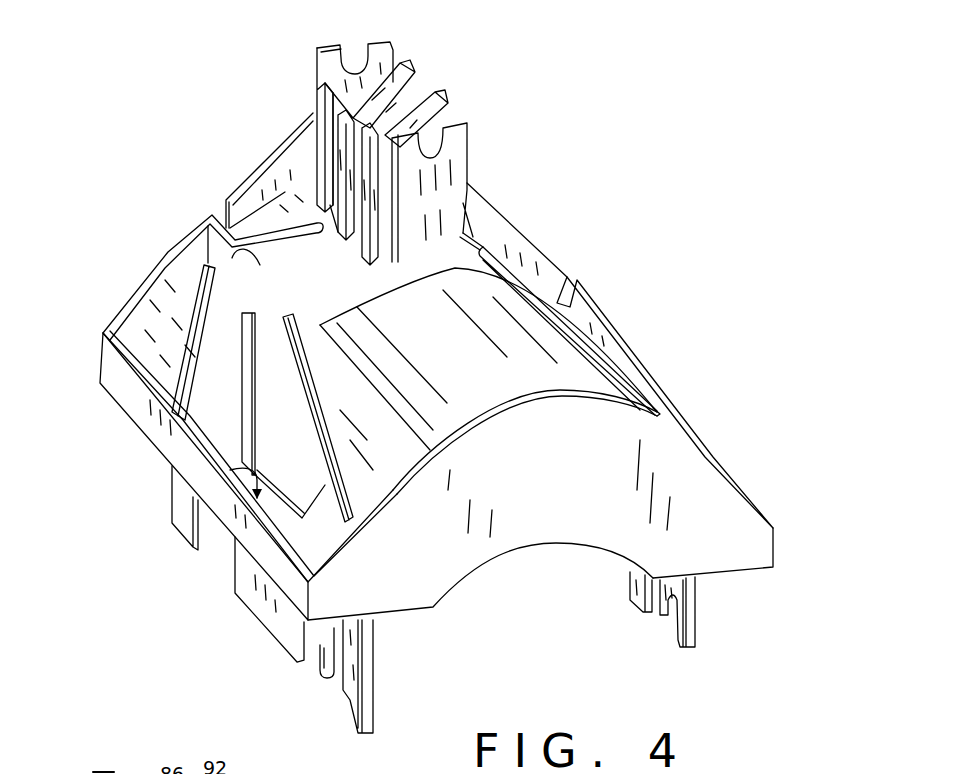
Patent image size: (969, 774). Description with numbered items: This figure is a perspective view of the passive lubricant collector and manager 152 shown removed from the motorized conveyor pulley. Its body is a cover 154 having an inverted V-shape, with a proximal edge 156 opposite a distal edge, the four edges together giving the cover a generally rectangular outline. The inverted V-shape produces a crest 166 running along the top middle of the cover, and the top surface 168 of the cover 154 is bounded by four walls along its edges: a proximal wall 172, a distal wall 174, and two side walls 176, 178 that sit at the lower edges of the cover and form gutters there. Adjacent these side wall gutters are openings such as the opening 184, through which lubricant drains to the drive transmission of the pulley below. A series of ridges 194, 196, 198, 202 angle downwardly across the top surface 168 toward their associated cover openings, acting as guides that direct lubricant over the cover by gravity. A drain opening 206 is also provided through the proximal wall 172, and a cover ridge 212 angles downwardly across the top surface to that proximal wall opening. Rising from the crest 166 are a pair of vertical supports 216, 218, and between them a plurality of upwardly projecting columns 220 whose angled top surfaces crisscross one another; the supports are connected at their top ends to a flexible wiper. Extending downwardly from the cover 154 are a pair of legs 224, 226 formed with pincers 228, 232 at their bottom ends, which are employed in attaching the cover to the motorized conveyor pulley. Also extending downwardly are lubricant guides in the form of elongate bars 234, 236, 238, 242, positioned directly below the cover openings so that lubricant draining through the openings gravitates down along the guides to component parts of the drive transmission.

The lubricant collector and manager 152 is at (577, 222).
The cover 154 is at (540, 350).
The proximal edge 156 is at (266, 191).
The crest 166 is at (449, 260).
The top surface 168 is at (482, 377).
The proximal wall 172 is at (175, 270).
The distal wall 174 is at (677, 457).
The side wall 176 is at (128, 392).
The side wall 178 is at (657, 383).
The opening 184 is at (243, 457).
The ridge 194 is at (193, 343).
The ridge 196 is at (243, 413).
The ridge 198 is at (242, 558).
The ridge 202 is at (607, 355).
The drain opening 206 is at (210, 200).
The cover ridge 212 is at (205, 258).
The vertical support 216 is at (452, 175).
The vertical support 218 is at (380, 58).
The columns 220 is at (410, 82).
The leg 224 is at (355, 636).
The leg 226 is at (683, 590).
The pincer 228 is at (322, 672).
The pincer 232 is at (684, 640).
The elongate bar 234 is at (168, 485).
The elongate bar 236 is at (247, 596).
The elongate bar 238 is at (357, 717).
The elongate bar 242 is at (637, 607).